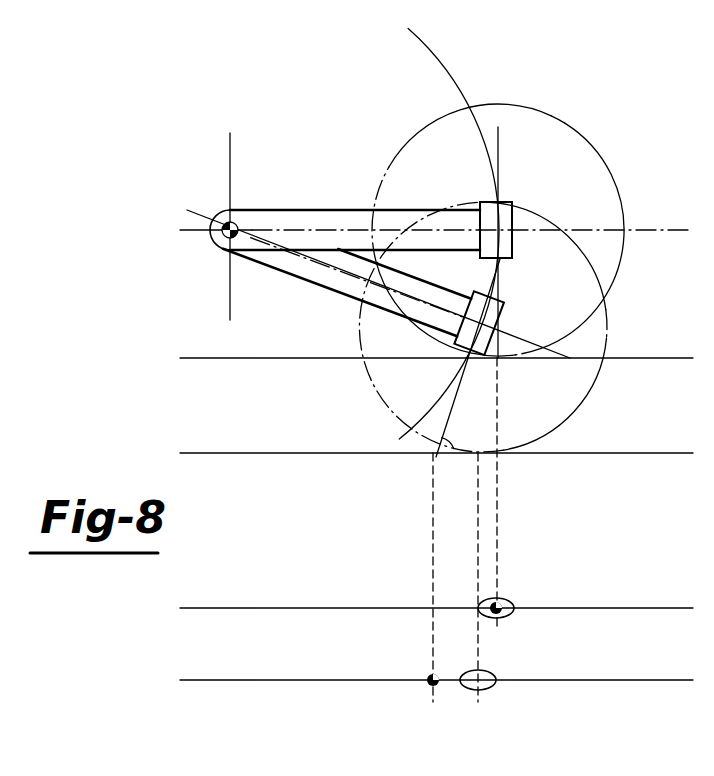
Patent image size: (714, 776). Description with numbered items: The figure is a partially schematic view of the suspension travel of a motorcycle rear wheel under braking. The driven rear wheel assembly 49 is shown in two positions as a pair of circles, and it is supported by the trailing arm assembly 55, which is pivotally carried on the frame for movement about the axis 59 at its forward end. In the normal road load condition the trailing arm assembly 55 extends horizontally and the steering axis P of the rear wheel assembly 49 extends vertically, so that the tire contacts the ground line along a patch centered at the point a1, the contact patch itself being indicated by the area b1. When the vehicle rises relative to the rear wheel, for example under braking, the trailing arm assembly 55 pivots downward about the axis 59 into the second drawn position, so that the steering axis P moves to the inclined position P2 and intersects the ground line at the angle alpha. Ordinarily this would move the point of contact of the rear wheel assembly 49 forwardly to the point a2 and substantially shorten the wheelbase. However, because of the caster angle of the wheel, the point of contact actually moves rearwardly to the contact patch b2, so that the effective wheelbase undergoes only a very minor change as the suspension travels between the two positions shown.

The pivot axis 59 is at (224, 221).
The trailing arm assembly 55 is at (310, 211).
The rear wheel assembly 49 is at (620, 190).
The steering axis P is at (499, 142).
The displaced steering axis position P2 is at (503, 266).
The angle alpha is at (453, 436).
The contact point a1 is at (503, 614).
The contact patch b1 is at (510, 600).
The forward contact point a2 is at (429, 684).
The rearward contact patch b2 is at (490, 689).